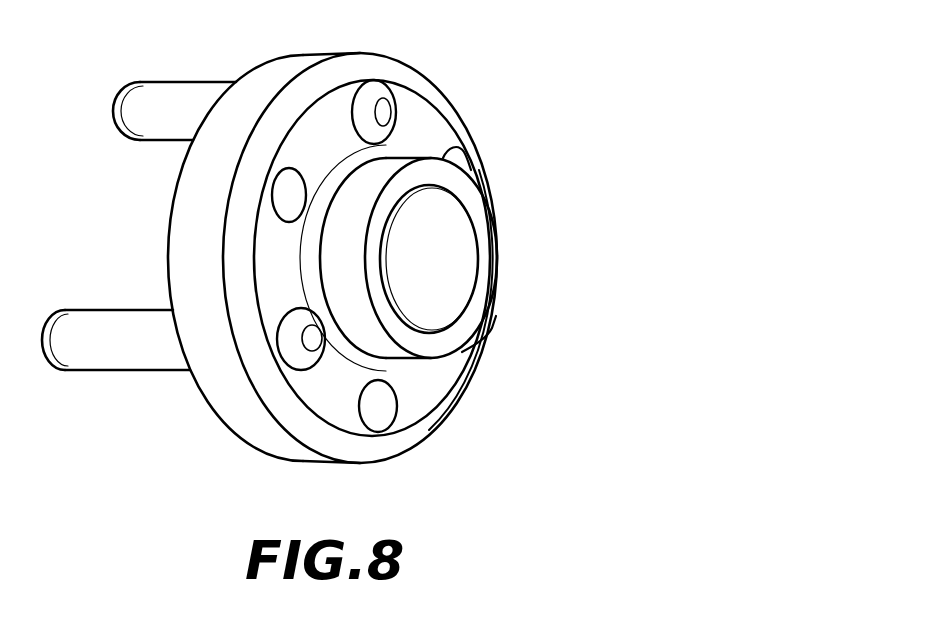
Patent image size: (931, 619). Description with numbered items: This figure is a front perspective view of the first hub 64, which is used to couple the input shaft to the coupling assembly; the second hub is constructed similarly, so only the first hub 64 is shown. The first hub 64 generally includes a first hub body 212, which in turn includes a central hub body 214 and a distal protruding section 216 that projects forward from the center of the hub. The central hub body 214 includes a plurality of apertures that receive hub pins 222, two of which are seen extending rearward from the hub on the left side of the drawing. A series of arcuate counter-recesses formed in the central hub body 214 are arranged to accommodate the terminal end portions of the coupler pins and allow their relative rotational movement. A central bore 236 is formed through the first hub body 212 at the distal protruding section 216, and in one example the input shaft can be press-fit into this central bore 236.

The first hub 64 is at (532, 103).
The first hub body 212 is at (362, 68).
The central hub body 214 is at (250, 425).
The distal protruding section 216 is at (488, 283).
The hub pins 222 is at (158, 127).
The central bore 236 is at (413, 263).